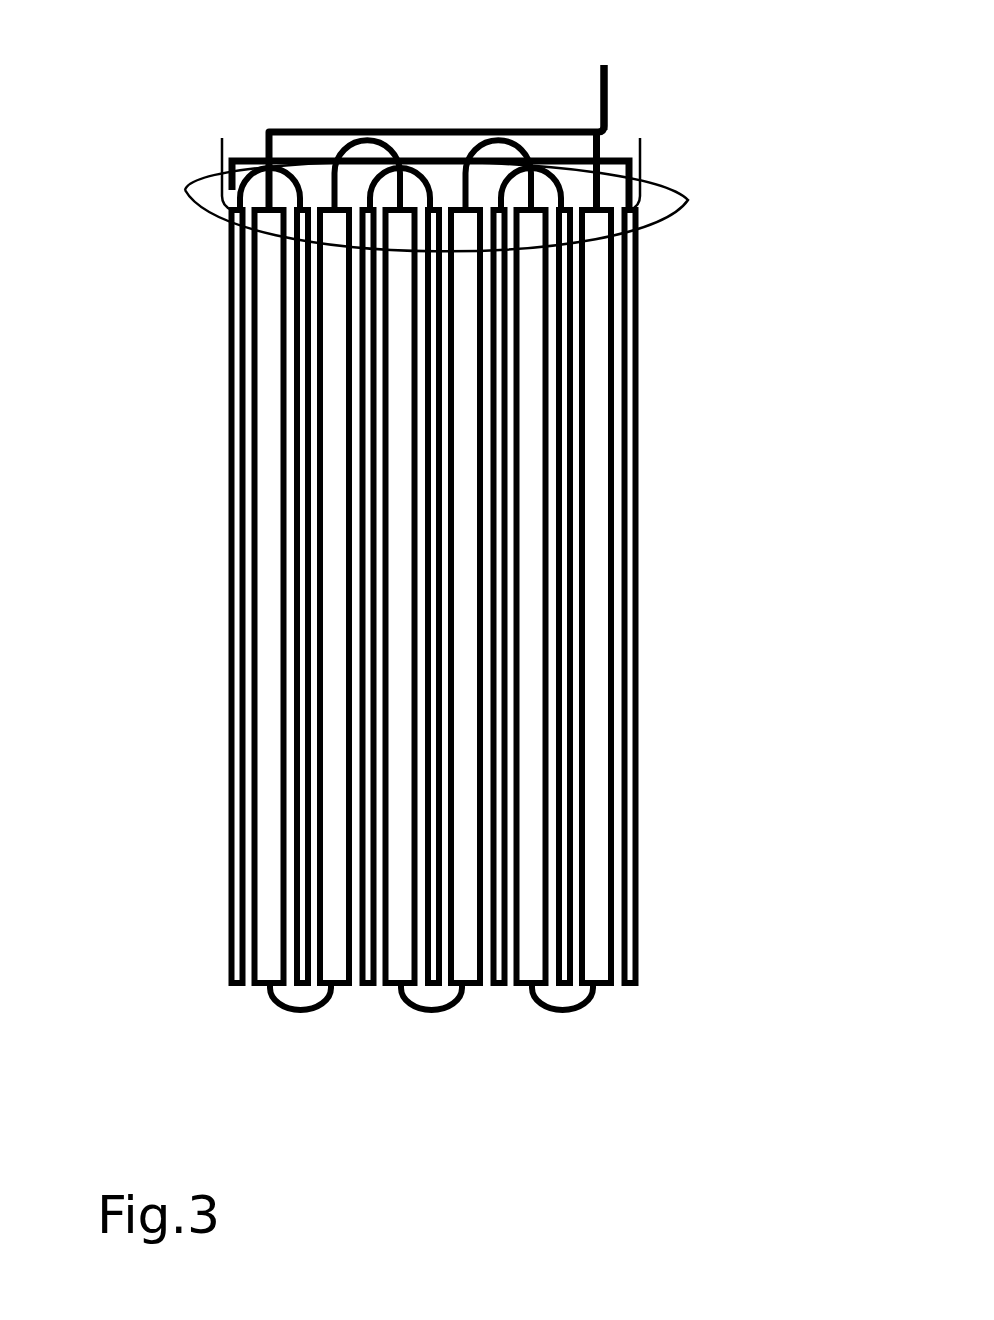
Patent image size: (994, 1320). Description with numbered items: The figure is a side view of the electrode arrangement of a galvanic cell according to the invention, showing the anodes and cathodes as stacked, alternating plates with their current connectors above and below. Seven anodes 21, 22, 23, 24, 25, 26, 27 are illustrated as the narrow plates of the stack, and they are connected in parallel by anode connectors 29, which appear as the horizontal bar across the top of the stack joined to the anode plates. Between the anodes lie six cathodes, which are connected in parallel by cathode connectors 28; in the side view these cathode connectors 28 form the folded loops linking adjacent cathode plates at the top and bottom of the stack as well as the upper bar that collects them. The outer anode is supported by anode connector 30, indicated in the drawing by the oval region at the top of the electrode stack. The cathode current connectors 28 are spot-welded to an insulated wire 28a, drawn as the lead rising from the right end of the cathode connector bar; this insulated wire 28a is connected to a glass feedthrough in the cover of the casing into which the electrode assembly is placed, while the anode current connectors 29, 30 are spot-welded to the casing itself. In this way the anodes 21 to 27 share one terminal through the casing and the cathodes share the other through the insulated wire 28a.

The anode 21 is at (630, 985).
The anode 22 is at (562, 985).
The anode 23 is at (498, 985).
The anode 24 is at (433, 987).
The anode 25 is at (368, 985).
The anode 26 is at (298, 984).
The anode 27 is at (237, 984).
The cathode connector 28 is at (547, 132).
The insulated wire 28a is at (608, 77).
The anode connector 29 is at (632, 183).
The anode connector 30 is at (688, 200).